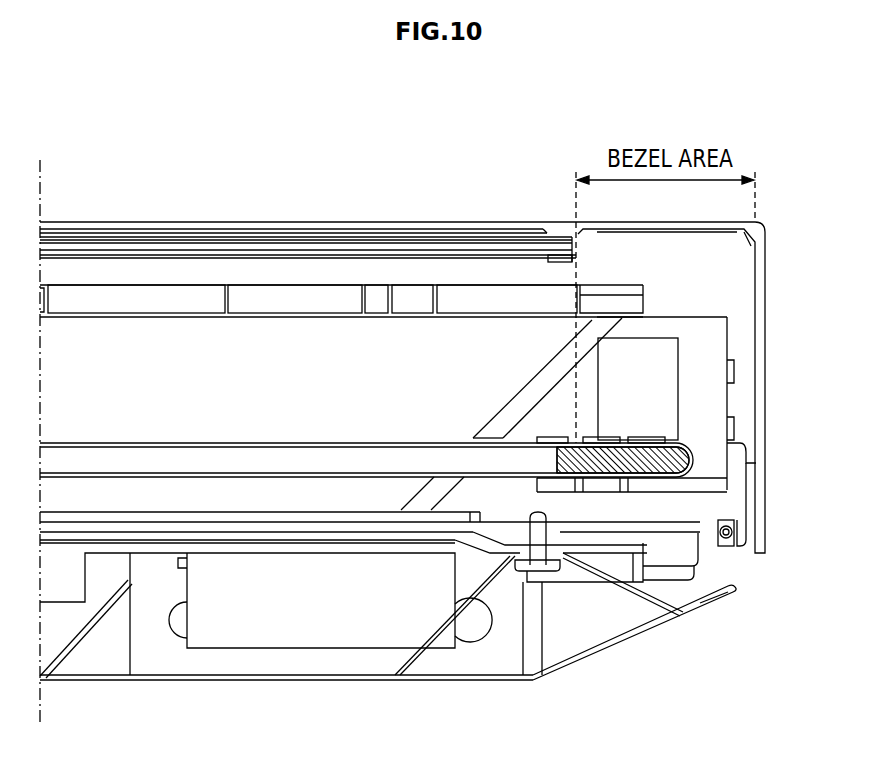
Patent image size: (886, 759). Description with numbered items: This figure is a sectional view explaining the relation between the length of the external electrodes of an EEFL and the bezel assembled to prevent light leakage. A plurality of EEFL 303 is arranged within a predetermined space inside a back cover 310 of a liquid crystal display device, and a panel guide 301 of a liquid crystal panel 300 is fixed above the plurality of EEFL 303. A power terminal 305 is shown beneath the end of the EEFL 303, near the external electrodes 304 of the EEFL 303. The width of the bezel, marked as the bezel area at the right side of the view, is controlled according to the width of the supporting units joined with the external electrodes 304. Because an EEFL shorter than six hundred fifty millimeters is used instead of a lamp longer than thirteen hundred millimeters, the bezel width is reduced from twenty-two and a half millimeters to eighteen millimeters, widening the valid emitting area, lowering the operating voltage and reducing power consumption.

The liquid crystal panel 300 is at (331, 250).
The panel guide 301 is at (737, 268).
The EEFL 303 is at (342, 460).
The external electrodes 304 is at (677, 458).
The power terminal 305 is at (653, 486).
The back cover 310 is at (702, 510).